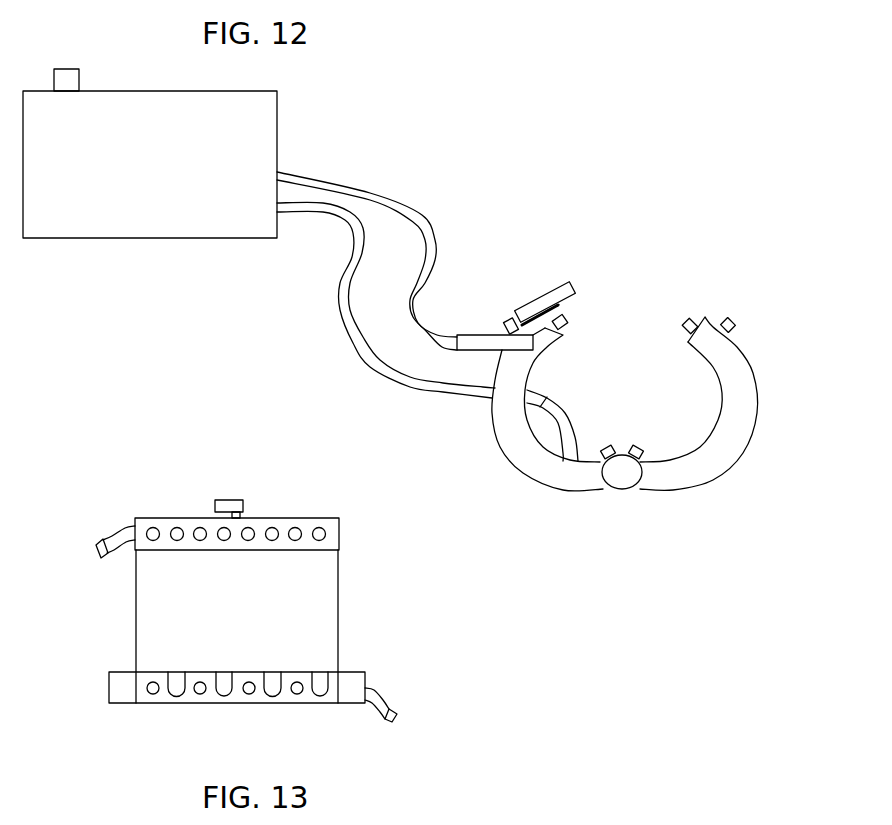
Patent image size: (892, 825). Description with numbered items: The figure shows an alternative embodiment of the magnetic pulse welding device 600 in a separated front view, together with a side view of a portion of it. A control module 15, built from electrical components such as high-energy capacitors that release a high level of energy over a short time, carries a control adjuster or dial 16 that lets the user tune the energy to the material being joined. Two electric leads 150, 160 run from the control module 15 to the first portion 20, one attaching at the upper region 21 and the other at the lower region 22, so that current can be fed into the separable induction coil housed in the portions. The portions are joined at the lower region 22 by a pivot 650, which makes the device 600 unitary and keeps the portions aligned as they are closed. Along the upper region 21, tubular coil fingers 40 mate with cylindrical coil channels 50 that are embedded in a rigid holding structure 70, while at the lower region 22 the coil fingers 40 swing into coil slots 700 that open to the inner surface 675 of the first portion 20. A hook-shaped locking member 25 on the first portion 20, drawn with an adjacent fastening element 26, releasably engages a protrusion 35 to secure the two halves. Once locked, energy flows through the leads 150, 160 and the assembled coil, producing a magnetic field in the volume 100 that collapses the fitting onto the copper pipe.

In FIG. 12, the control module 15 is at (250, 125).
In FIG. 12, the control adjuster or dial 16 is at (65, 81).
In FIG. 13, the first portion 20 is at (240, 598).
In FIG. 13, the upper region 21 is at (339, 525).
In FIG. 12, the lower region 22 is at (588, 477).
In FIG. 12, the locking member 25 is at (535, 315).
In FIG. 13, the locking member 25 is at (223, 503).
In FIG. 12, the nut 26 is at (508, 320).
In FIG. 13, the nut 26 is at (247, 510).
In FIG. 12, the protrusion 35 is at (736, 325).
In FIG. 12, the coil fingers 40 is at (566, 318).
In FIG. 13, the coil fingers 40 is at (146, 538).
In FIG. 13, the coil channels 50 is at (193, 528).
In FIG. 13, the holding structure 70 is at (162, 523).
In FIG. 12, the volume 100 is at (625, 361).
In FIG. 12, the electric lead 150 is at (478, 343).
In FIG. 13, the electric lead 150 is at (110, 538).
In FIG. 12, the electric lead 160 is at (568, 434).
In FIG. 13, the electric lead 160 is at (388, 703).
In FIG. 12, the device 600 is at (700, 253).
In FIG. 12, the pivot 650 is at (622, 475).
In FIG. 13, the pivot 650 is at (123, 690).
In FIG. 13, the inner surface 675 is at (153, 672).
In FIG. 13, the coil slots 700 is at (273, 683).